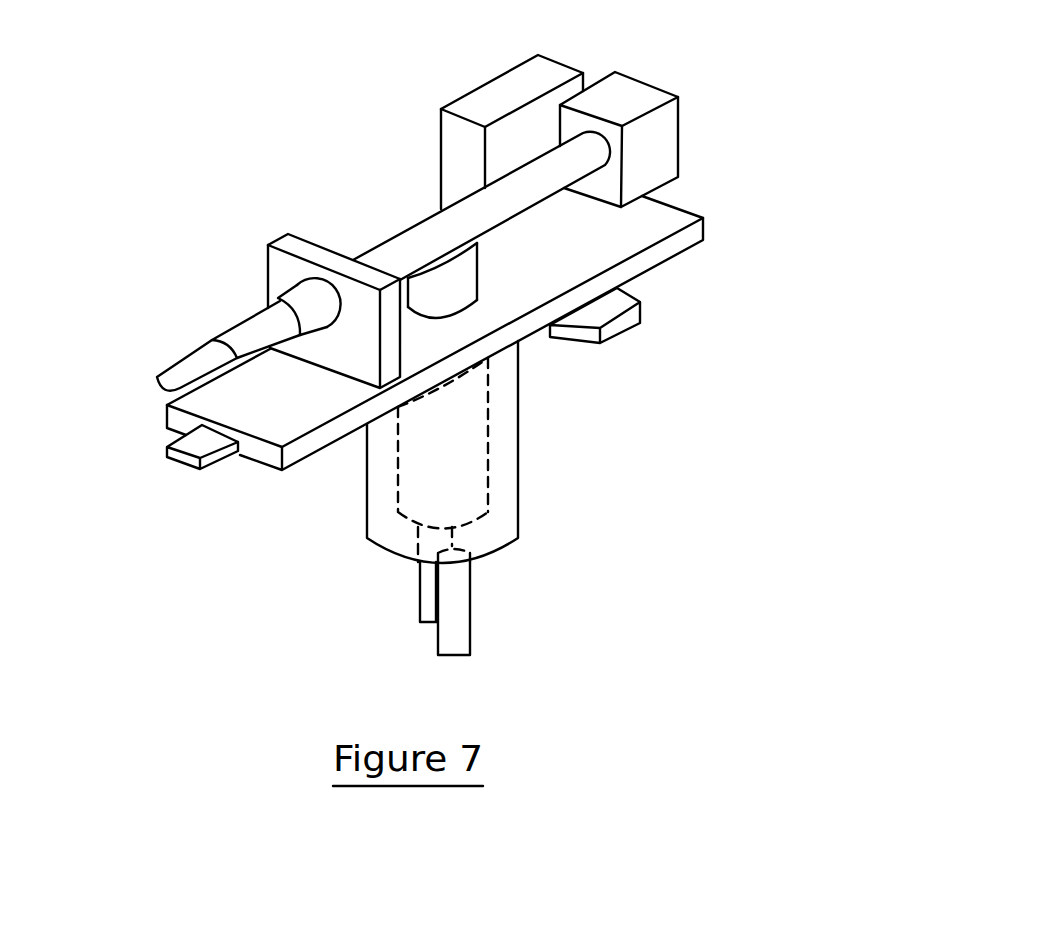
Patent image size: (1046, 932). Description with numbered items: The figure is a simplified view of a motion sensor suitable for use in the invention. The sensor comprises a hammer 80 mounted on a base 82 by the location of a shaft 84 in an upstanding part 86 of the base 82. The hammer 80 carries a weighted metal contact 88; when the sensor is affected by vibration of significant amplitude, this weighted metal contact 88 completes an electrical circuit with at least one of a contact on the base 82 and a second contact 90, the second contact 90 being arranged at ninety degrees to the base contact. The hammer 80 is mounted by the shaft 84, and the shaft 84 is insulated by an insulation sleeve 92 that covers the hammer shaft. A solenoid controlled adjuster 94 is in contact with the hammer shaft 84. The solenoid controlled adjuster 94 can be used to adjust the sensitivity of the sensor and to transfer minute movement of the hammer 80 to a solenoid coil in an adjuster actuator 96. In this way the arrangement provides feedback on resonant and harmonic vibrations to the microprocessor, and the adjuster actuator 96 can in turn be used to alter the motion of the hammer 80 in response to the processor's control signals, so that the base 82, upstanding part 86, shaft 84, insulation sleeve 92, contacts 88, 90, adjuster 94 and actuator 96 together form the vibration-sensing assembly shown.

The hammer 80 is at (697, 88).
The base 82 is at (197, 402).
The shaft 84 is at (432, 218).
The upstanding part 86 is at (285, 242).
The weighted metal contact 88 is at (670, 157).
The second contact 90 is at (485, 92).
The insulation sleeve 92 is at (287, 292).
The solenoid controlled adjuster 94 is at (467, 287).
The adjuster actuator 96 is at (487, 465).